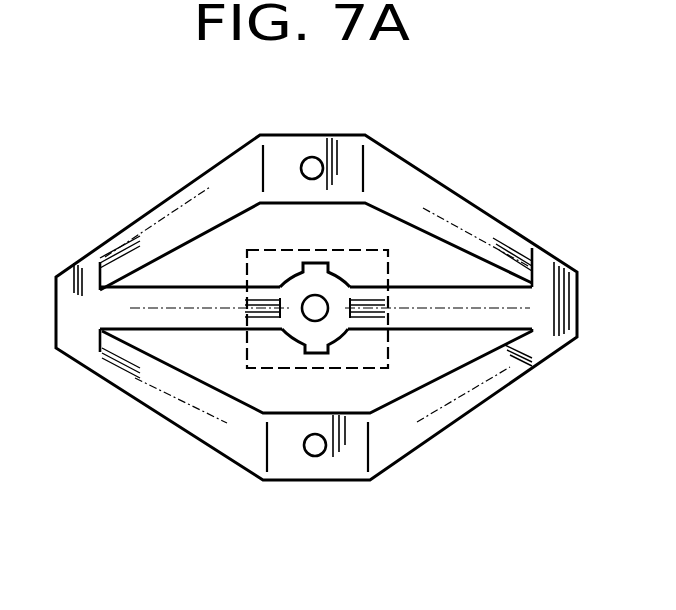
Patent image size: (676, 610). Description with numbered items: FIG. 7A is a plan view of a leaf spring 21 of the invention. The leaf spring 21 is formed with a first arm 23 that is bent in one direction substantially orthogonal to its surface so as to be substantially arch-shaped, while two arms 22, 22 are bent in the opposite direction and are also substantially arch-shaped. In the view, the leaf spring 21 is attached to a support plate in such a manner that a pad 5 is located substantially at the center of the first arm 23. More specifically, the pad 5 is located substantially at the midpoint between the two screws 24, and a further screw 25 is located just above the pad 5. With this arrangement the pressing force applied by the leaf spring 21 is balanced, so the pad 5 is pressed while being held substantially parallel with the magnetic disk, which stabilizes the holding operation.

The pad 5 is at (247, 250).
The leaf spring 21 is at (530, 228).
The arms 22 is at (433, 190).
The first arm 23 is at (483, 318).
The screws 24 is at (314, 157).
The screw 25 is at (315, 312).